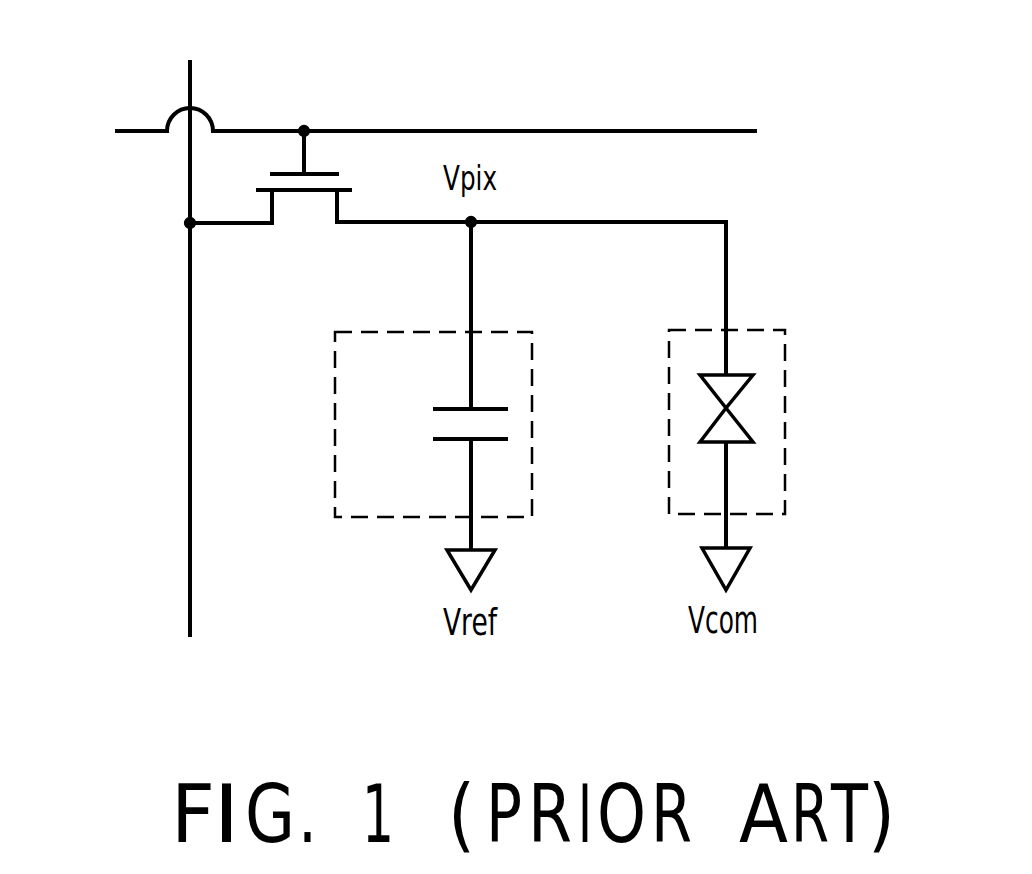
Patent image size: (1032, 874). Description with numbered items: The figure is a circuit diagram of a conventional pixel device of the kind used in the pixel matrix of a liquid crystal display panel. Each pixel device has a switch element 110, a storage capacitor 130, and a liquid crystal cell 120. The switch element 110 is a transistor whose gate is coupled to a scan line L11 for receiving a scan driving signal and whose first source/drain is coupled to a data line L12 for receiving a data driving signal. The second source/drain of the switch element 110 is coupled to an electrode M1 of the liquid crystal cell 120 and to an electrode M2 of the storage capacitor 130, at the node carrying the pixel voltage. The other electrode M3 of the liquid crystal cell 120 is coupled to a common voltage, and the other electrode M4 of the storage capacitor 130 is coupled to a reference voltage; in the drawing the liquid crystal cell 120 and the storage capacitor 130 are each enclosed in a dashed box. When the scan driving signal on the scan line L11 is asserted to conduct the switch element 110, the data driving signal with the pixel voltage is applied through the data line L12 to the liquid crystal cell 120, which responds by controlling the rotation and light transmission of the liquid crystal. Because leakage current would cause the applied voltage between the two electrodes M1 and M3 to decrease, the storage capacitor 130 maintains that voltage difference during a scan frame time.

The scan line L11 is at (145, 133).
The data line L12 is at (193, 83).
The switch element 110 is at (308, 212).
The liquid crystal cell 120 is at (787, 424).
The storage capacitor 130 is at (533, 425).
The electrode of the liquid crystal cell M1 is at (741, 374).
The electrode of the storage capacitor M2 is at (470, 407).
The other electrode of the liquid crystal cell M3 is at (737, 443).
The other electrode of the storage capacitor M4 is at (470, 442).